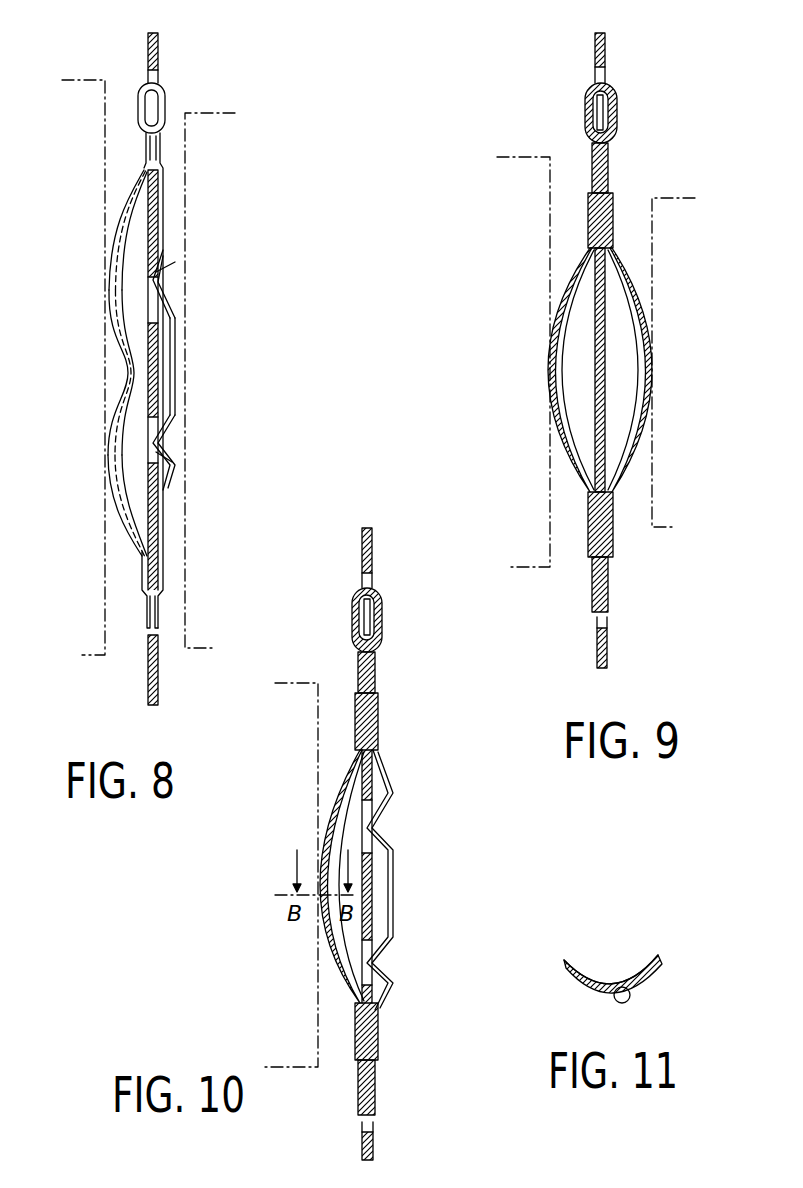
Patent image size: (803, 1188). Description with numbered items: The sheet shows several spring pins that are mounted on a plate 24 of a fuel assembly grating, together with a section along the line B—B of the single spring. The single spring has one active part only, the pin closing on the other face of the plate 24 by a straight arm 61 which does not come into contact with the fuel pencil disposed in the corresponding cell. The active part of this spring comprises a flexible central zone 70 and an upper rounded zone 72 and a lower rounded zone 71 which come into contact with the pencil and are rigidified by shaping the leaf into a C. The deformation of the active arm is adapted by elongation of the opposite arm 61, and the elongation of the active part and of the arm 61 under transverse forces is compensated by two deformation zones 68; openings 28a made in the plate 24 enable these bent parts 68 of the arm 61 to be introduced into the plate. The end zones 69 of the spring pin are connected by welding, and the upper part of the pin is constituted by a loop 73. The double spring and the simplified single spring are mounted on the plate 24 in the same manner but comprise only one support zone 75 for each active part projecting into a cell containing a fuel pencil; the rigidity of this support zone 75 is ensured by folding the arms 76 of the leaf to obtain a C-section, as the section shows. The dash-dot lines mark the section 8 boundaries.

In FIG. 8, the section line 8- 8 is at (213, 113).
In FIG. 9, the section line 8- 8 is at (522, 157).
In FIG. 10, the section line 8- 8 is at (290, 683).
In FIG. 9, the plate 24 is at (600, 385).
In FIG. 10, the plate 24 is at (370, 881).
In FIG. 8, the openings 28a is at (168, 268).
In FIG. 8, the straight arm 61 is at (172, 358).
In FIG. 8, the deformation zones 68 is at (158, 301).
In FIG. 8, the end zones 69 is at (157, 155).
In FIG. 8, the flexible central zone 70 is at (131, 373).
In FIG. 8, the lower rounded zone 71 is at (113, 514).
In FIG. 8, the upper rounded zone 72 is at (115, 241).
In FIG. 8, the loop 73 is at (138, 92).
In FIG. 9, the support zone 75 is at (550, 373).
In FIG. 10, the support zone 75 is at (325, 936).
In FIG. 11, the support zone 75 is at (620, 988).
In FIG. 9, the arms of the leaf 76 is at (625, 284).
In FIG. 10, the arms of the leaf 76 is at (333, 826).
In FIG. 11, the arms of the leaf 76 is at (562, 966).